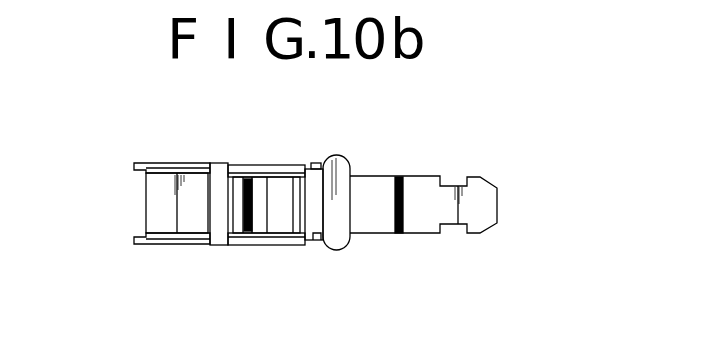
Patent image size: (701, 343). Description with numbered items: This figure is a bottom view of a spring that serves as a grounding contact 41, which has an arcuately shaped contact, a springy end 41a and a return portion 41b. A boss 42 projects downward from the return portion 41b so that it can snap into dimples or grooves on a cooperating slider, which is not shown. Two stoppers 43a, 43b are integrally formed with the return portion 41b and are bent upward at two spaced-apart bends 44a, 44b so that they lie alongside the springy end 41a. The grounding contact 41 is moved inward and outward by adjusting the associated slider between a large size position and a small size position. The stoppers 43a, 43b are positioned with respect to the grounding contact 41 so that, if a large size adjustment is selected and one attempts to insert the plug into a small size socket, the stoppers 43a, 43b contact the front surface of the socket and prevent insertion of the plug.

The grounding contact 41 is at (399, 167).
The springy end 41a is at (145, 204).
The return portion 41b is at (282, 222).
The boss 42 is at (252, 188).
The stopper 43a is at (172, 163).
The stopper 43b is at (163, 247).
The bend 44a is at (220, 163).
The bend 44b is at (312, 168).